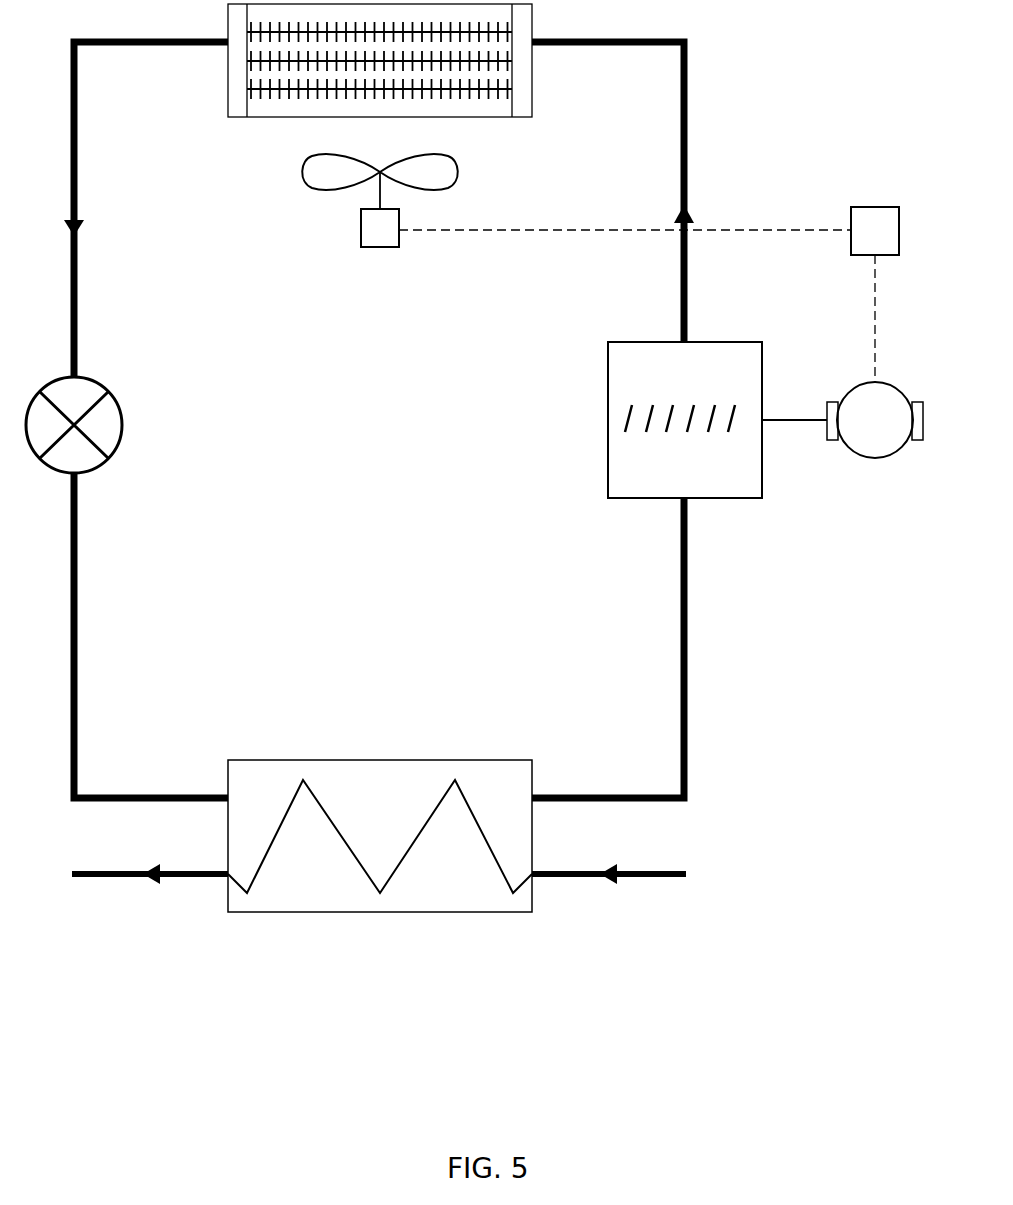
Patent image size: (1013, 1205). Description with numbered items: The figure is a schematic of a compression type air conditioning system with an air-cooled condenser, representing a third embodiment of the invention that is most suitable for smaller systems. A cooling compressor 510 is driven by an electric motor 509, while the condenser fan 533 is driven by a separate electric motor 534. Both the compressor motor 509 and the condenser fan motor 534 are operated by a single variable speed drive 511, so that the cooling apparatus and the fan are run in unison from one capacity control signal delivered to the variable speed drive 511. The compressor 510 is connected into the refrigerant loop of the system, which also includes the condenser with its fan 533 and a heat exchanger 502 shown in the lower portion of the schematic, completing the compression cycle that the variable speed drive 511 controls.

The evaporator heat exchanger 502 is at (405, 760).
The electric motor 509 is at (848, 380).
The cooling compressor 510 is at (598, 420).
The variable speed drive 511 is at (848, 222).
The condenser fan 533 is at (305, 182).
The electric motor 534 is at (353, 238).